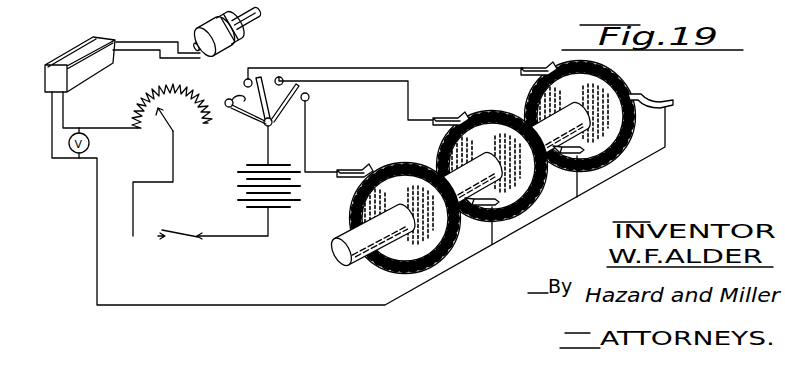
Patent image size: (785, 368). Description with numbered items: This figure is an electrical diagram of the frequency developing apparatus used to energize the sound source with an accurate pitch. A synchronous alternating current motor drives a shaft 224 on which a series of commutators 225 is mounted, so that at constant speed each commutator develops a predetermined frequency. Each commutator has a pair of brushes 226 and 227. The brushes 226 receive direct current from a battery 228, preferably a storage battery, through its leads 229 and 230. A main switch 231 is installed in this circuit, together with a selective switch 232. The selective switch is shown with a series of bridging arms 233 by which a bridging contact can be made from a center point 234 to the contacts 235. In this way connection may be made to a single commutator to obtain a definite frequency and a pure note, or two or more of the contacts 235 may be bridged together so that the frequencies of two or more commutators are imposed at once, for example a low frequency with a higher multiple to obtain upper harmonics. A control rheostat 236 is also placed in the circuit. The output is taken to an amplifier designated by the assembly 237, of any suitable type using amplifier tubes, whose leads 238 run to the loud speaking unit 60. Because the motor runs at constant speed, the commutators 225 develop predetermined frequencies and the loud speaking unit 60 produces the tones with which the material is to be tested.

The loud speaking unit 60 is at (238, 43).
The shaft 224 is at (345, 262).
The commutators 225 is at (441, 244).
The brushes 226 is at (356, 169).
The brushes 227 is at (504, 216).
The battery 228 is at (236, 178).
The lead 229 is at (268, 163).
The lead 230 is at (229, 238).
The main switch 231 is at (172, 239).
The selective switch 232 is at (228, 86).
The bridging arms 233 is at (284, 106).
The center point 234 is at (262, 125).
The contacts 235 is at (309, 97).
The control rheostat 236 is at (157, 120).
The amplifier 237 is at (60, 48).
The leads 238 is at (138, 41).